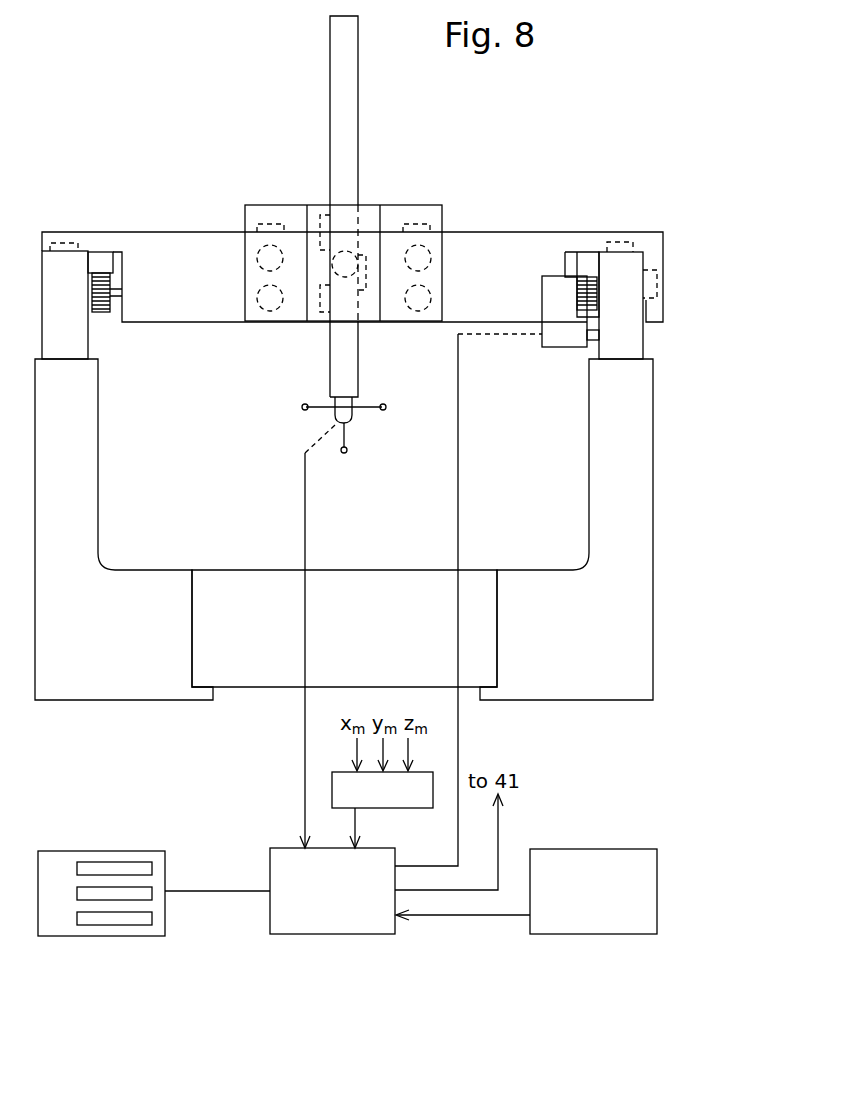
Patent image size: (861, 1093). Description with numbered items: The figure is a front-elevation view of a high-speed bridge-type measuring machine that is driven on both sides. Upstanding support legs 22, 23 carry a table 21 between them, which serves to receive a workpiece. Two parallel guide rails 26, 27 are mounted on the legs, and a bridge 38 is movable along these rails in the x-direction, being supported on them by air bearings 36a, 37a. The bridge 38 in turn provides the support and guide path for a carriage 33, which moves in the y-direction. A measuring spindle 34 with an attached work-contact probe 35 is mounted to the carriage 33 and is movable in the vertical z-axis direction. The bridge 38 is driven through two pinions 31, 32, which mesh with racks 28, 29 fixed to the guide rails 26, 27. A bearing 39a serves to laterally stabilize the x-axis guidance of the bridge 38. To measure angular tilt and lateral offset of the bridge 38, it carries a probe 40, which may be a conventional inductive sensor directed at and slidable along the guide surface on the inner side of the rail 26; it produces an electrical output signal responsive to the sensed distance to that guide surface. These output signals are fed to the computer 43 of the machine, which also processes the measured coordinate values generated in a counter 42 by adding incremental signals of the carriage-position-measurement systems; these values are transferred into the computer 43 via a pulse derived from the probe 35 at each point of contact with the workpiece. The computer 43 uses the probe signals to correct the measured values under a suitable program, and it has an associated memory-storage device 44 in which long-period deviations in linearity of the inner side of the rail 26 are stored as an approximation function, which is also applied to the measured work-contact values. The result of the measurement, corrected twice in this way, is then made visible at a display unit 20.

The display unit 20 is at (143, 851).
The table 21 is at (248, 676).
The upstanding support leg 22 is at (512, 690).
The upstanding support leg 23 is at (80, 693).
The guide rail 26 is at (600, 350).
The guide rail 27 is at (54, 300).
The rack 28 is at (588, 258).
The rack 29 is at (102, 262).
The pinion 31 is at (572, 287).
The pinion 32 is at (105, 310).
The carriage 33 is at (370, 302).
The measuring spindle 34 is at (331, 80).
The work-contact probe 35 is at (352, 414).
The air bearing 36a is at (632, 240).
The air bearing 37a is at (66, 243).
The bridge 38 is at (502, 240).
The bearing 39a is at (650, 285).
The probe 40 is at (562, 335).
The counter 42 is at (405, 808).
The computer 43 is at (268, 858).
The memory-storage device 44 is at (582, 850).